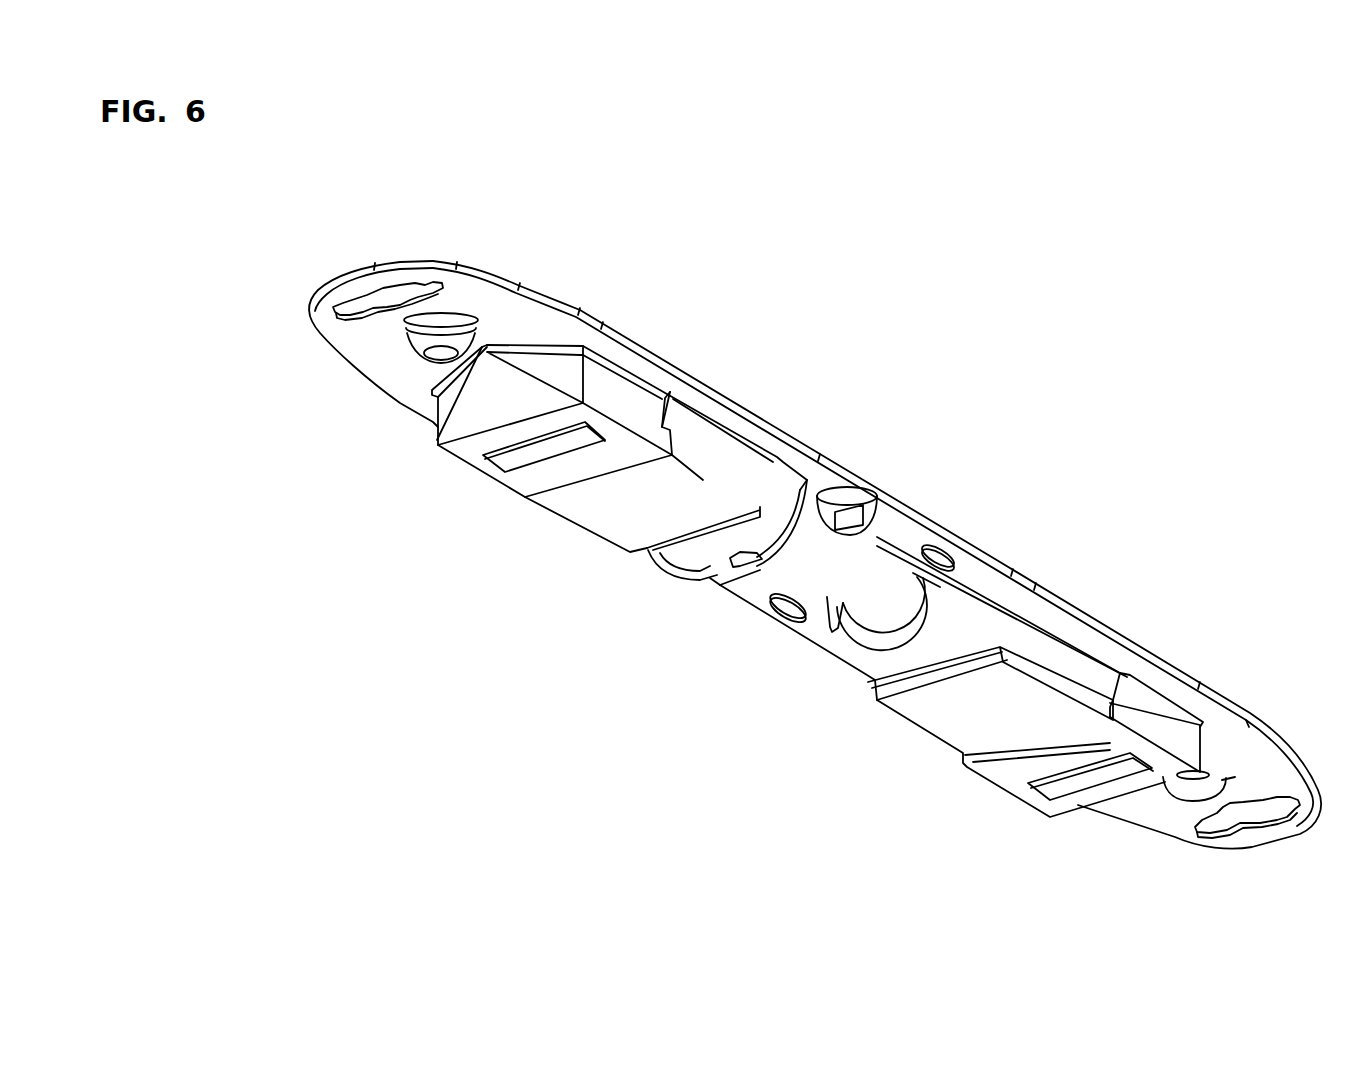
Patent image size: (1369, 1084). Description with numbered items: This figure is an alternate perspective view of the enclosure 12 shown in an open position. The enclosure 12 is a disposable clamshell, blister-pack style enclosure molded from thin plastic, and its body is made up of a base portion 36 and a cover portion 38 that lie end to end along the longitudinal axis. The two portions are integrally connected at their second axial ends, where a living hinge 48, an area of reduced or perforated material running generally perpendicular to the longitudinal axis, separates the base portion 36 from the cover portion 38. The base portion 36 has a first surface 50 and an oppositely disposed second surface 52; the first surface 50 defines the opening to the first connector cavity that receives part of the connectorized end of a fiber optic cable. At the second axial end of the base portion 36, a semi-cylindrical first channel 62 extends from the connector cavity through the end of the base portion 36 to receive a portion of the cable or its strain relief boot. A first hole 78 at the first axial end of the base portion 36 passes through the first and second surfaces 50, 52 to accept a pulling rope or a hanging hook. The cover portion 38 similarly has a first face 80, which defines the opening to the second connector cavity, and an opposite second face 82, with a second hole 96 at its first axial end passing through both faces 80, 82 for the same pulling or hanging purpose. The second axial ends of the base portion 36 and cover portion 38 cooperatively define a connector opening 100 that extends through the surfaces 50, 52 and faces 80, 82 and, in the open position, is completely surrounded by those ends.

The enclosure 12 is at (397, 192).
The base portion 36 is at (1241, 680).
The cover portion 38 is at (600, 306).
The living hinge 48 is at (720, 585).
The first surface 50 is at (1122, 632).
The second surface 52 is at (1261, 766).
The first channel 62 is at (873, 625).
The first hole 78 is at (1250, 828).
The first face 80 is at (663, 355).
The second face 82 is at (389, 356).
The second hole 96 is at (368, 298).
The connector opening 100 is at (817, 568).